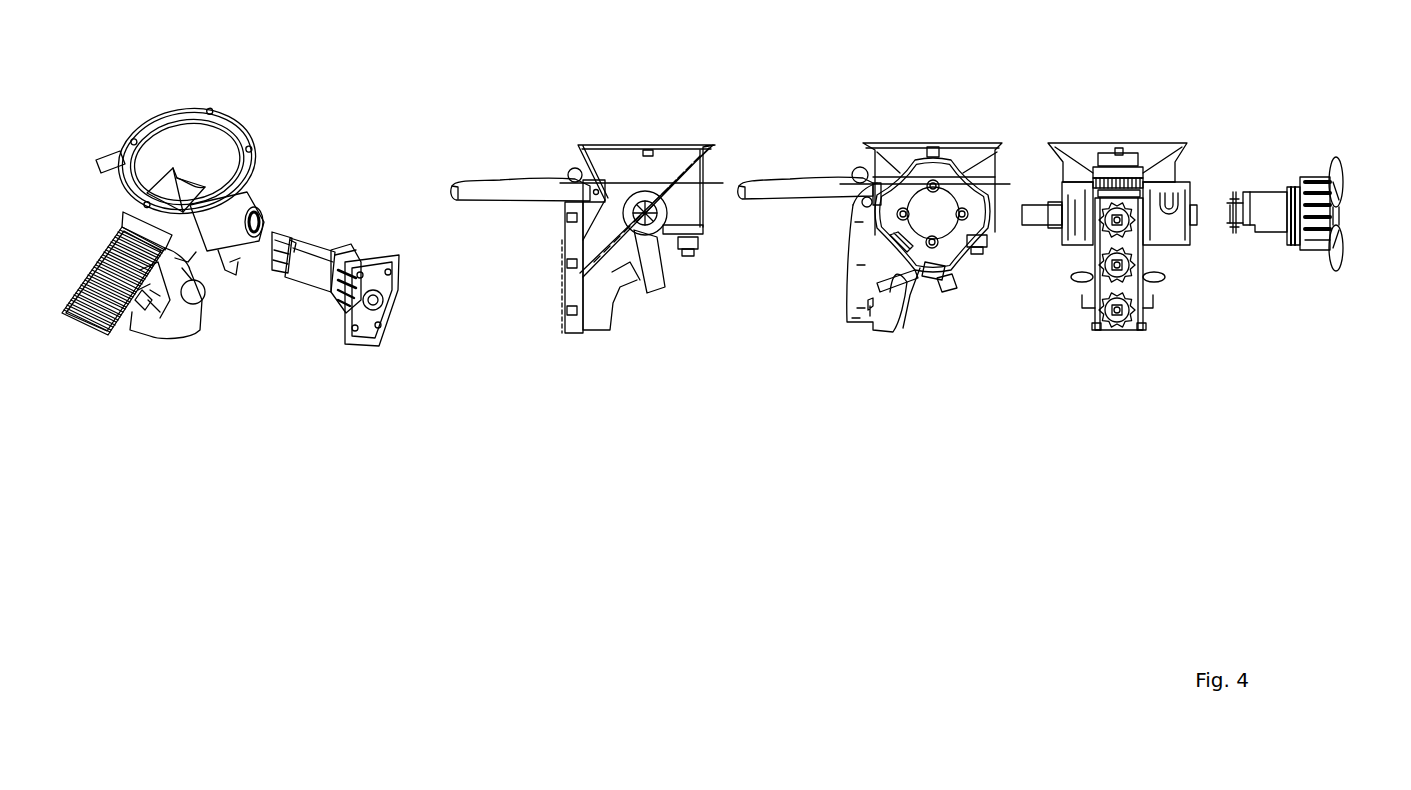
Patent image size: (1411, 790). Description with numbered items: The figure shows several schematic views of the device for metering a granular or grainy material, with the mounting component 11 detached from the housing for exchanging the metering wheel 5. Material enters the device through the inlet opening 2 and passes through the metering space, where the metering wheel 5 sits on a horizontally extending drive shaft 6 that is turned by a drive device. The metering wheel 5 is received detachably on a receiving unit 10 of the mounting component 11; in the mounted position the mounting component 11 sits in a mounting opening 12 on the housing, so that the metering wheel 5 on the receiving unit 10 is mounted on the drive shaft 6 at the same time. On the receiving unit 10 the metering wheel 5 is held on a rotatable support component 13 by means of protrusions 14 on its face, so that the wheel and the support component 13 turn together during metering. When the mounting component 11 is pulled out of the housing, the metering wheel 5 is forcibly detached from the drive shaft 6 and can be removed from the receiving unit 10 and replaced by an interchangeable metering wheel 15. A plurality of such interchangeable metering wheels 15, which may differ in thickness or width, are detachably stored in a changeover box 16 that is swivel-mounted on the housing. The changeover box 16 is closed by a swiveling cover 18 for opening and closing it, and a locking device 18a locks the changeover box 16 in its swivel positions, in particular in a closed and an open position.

The inlet opening 2 is at (684, 158).
The metering wheel 5 is at (294, 242).
The drive shaft 6 is at (112, 158).
The receiving unit 10 is at (303, 292).
The mounting component 11 is at (397, 249).
The mounting opening 12 is at (240, 268).
The rotatable support component 13 is at (304, 244).
The protrusions 14 is at (284, 240).
The interchangeable metering wheel 15 is at (150, 330).
The changeover box 16 is at (822, 300).
The swiveling cover 18 is at (815, 182).
The locking device 18a is at (1145, 166).